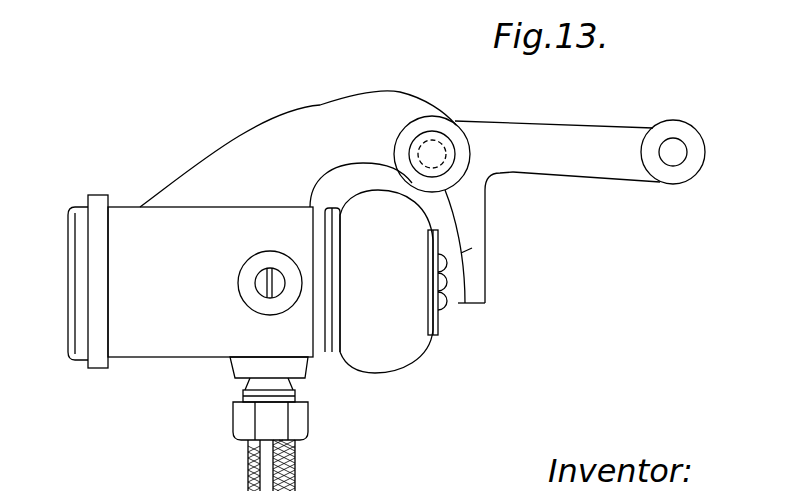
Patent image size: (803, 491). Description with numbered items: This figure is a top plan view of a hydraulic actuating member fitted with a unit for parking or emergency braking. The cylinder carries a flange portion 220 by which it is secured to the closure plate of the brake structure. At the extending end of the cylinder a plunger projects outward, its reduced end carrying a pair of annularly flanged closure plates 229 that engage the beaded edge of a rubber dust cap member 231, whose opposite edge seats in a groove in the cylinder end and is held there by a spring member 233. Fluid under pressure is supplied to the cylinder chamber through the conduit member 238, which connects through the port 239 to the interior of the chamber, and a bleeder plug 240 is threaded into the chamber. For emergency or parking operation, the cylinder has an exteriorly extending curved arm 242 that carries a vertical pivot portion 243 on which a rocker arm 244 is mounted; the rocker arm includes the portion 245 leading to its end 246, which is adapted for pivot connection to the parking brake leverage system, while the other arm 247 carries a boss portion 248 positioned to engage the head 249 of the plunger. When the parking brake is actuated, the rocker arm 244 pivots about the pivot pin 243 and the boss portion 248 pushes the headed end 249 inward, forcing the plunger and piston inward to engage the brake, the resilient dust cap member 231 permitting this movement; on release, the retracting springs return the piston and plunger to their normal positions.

The flange portion 220 is at (98, 200).
The annularly flanged closure plates 229 is at (438, 332).
The rubber dust cap member 231 is at (390, 365).
The spring member 233 is at (331, 355).
The conduit member 238 is at (260, 475).
The port 239 is at (250, 370).
The bleeder plug 240 is at (257, 277).
The curved arm 242 is at (328, 110).
The pivot portion 243 is at (432, 148).
The rocker arm 244 is at (487, 140).
The arm portion 245 is at (560, 133).
The end 246 is at (675, 137).
The other arm 247 is at (479, 228).
The boss portion 248 is at (472, 287).
The head 249 is at (445, 305).